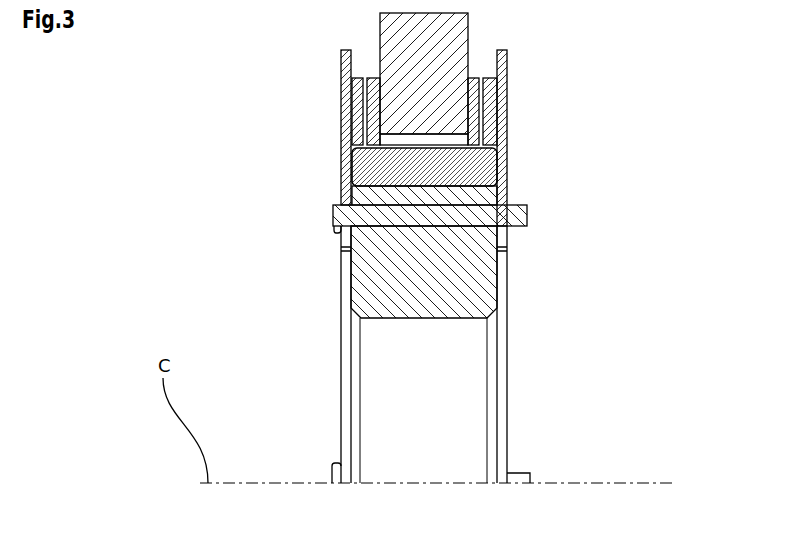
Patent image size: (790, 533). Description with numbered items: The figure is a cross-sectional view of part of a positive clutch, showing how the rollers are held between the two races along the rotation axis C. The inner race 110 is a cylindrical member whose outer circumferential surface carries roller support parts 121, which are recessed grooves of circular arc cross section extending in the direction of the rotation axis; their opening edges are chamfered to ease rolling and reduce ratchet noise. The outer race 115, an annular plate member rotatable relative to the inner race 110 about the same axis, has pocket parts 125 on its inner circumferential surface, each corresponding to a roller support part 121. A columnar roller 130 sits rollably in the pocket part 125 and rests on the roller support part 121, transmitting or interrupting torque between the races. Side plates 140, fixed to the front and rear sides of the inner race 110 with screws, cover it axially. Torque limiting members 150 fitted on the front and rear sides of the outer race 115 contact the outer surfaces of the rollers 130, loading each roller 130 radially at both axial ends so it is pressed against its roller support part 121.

The inner race 110 is at (445, 268).
The outer race 115 is at (450, 37).
The roller support part 121 is at (360, 182).
The pocket part 125 is at (345, 143).
The roller 130 is at (477, 170).
The side plate 140 is at (341, 282).
The torque limiting member 150 is at (345, 95).